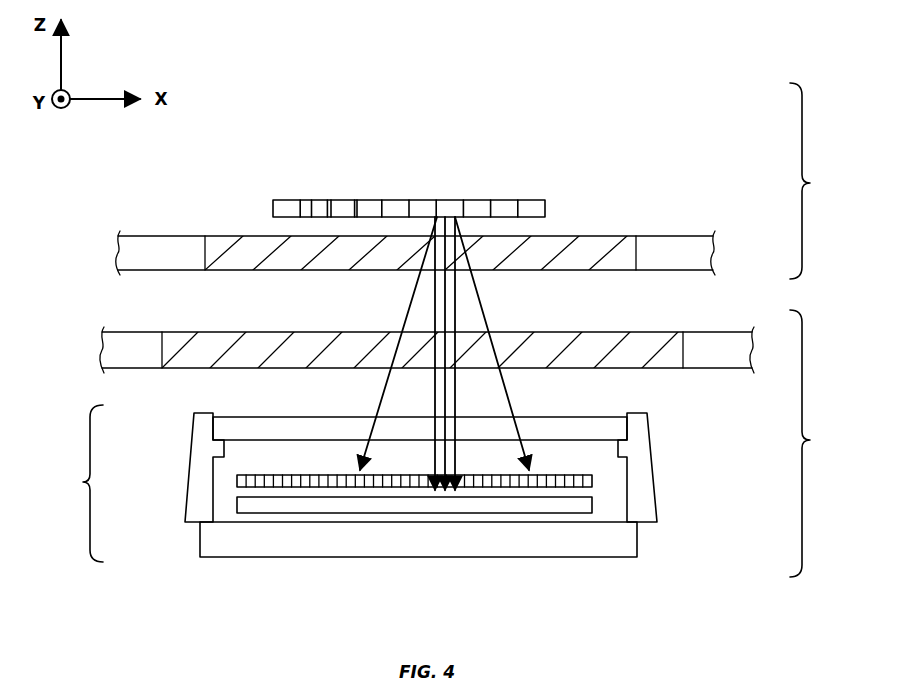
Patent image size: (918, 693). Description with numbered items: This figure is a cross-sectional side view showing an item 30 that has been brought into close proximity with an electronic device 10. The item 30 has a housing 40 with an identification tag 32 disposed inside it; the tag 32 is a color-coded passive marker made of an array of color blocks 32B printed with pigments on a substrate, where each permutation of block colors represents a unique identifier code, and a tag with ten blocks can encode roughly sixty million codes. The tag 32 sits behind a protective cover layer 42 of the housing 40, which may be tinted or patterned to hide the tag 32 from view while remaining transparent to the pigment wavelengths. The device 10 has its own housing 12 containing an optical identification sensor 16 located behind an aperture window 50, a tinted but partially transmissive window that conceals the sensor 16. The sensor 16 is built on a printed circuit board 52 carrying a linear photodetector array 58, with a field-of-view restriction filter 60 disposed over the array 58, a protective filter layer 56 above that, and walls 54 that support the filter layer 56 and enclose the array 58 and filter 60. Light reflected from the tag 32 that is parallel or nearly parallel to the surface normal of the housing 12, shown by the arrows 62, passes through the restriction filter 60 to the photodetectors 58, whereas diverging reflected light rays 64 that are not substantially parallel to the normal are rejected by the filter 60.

The electronic device 10 is at (814, 443).
The housing 12 is at (143, 286).
The optical identification sensor 16 is at (77, 483).
The item 30 is at (814, 181).
The identification tag 32 is at (555, 200).
The color blocks 32B is at (357, 204).
The housing 40 is at (158, 243).
The protective cover layer 42 is at (597, 270).
The aperture window 50 is at (648, 330).
The printed circuit board 52 is at (610, 560).
The walls 54 is at (190, 457).
The filter layer 56 is at (602, 415).
The photodetector array 58 is at (593, 503).
The field-of-view restriction filter 60 is at (575, 478).
The light rays 62 is at (447, 286).
The light rays 64 is at (383, 390).